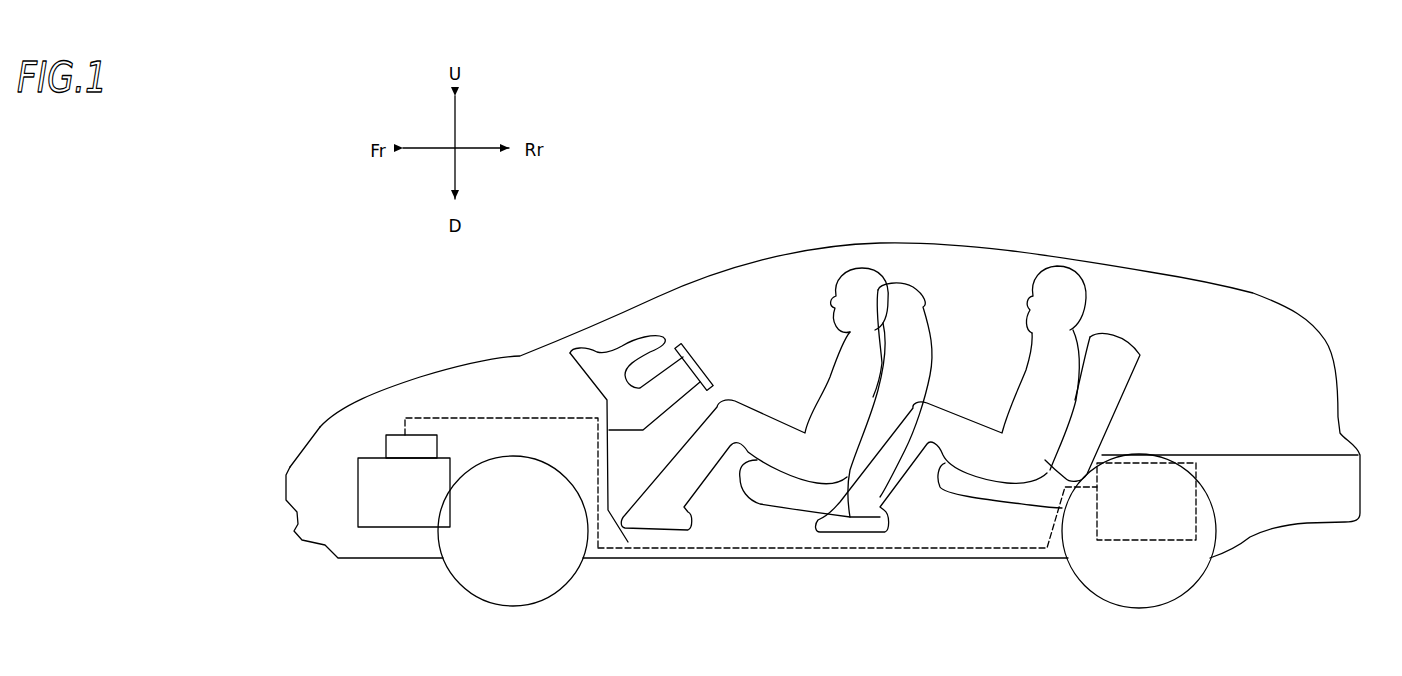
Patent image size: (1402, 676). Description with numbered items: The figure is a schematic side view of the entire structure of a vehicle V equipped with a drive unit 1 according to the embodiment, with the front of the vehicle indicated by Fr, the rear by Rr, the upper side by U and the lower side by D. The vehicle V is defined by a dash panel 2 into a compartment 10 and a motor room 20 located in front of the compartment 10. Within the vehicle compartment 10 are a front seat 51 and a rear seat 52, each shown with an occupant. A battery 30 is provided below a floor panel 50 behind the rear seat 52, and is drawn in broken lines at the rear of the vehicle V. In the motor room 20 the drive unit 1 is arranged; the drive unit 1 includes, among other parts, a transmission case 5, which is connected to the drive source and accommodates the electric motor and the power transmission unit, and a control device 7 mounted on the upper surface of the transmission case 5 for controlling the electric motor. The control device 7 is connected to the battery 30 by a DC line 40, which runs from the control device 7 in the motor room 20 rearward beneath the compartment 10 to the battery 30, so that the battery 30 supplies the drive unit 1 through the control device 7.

The vehicle V is at (971, 108).
The drive unit 1 is at (356, 517).
The dash panel 2 is at (610, 463).
The transmission case 5 is at (405, 505).
The control device 7 is at (385, 447).
The compartment 10 is at (982, 282).
The motor room 20 is at (342, 462).
The battery 30 is at (1150, 480).
The DC line 40 is at (892, 551).
The floor panel 50 is at (1288, 455).
The front seat 51 is at (790, 492).
The rear seat 52 is at (1113, 350).